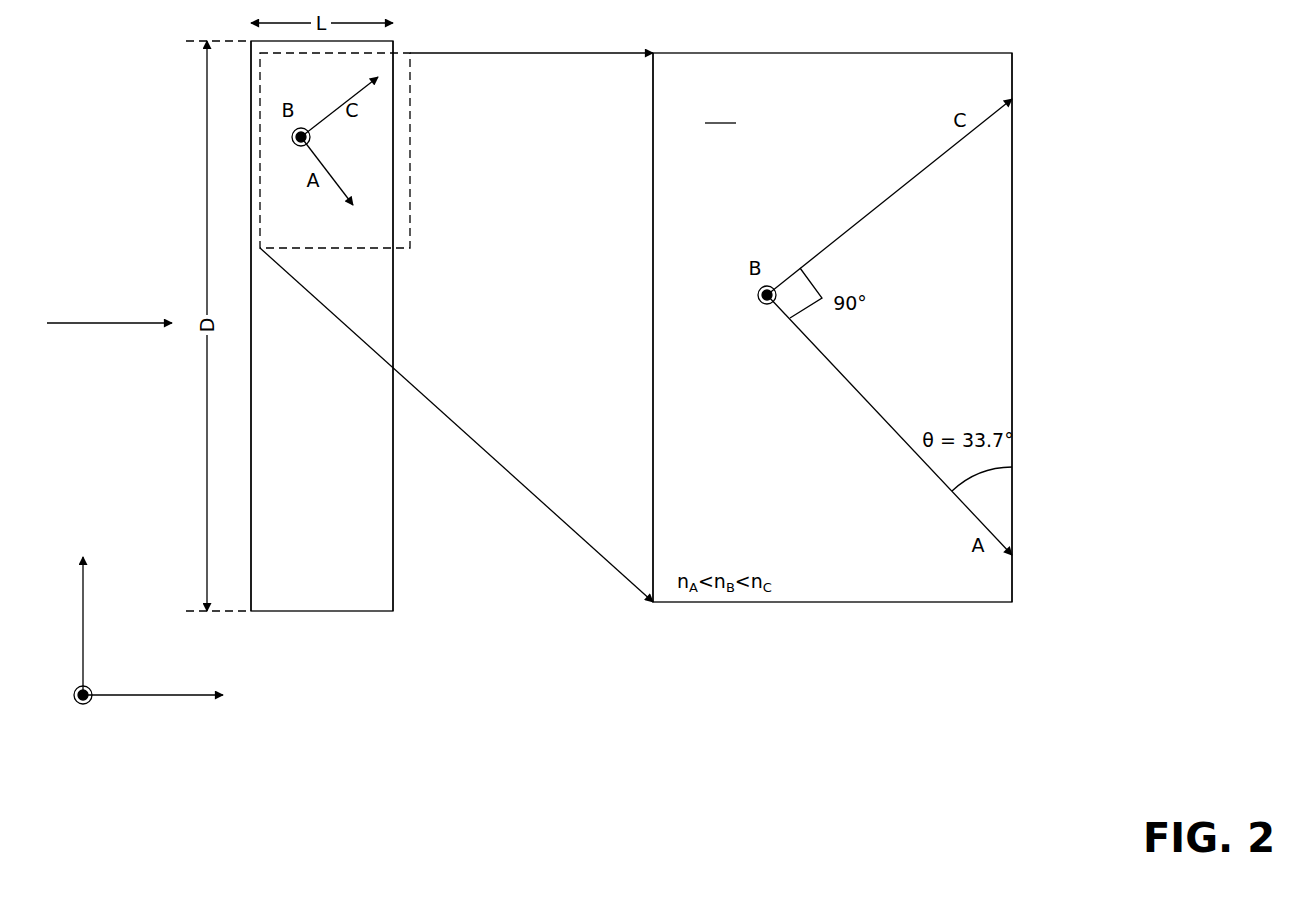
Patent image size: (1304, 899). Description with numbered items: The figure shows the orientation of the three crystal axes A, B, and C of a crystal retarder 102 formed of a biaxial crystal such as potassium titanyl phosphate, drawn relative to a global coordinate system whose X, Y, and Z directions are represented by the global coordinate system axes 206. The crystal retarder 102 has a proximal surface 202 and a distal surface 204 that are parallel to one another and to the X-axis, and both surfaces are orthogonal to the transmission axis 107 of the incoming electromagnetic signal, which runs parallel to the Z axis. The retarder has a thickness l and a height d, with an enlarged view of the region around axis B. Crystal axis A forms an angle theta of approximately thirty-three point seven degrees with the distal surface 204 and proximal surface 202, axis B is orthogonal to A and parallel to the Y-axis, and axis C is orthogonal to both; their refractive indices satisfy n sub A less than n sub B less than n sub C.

The crystal retarder 102 is at (313, 611).
The transmission axis 107 is at (100, 323).
The proximal surface 202 is at (251, 463).
The distal surface 204 is at (393, 543).
The global coordinate system axes 206 is at (122, 742).